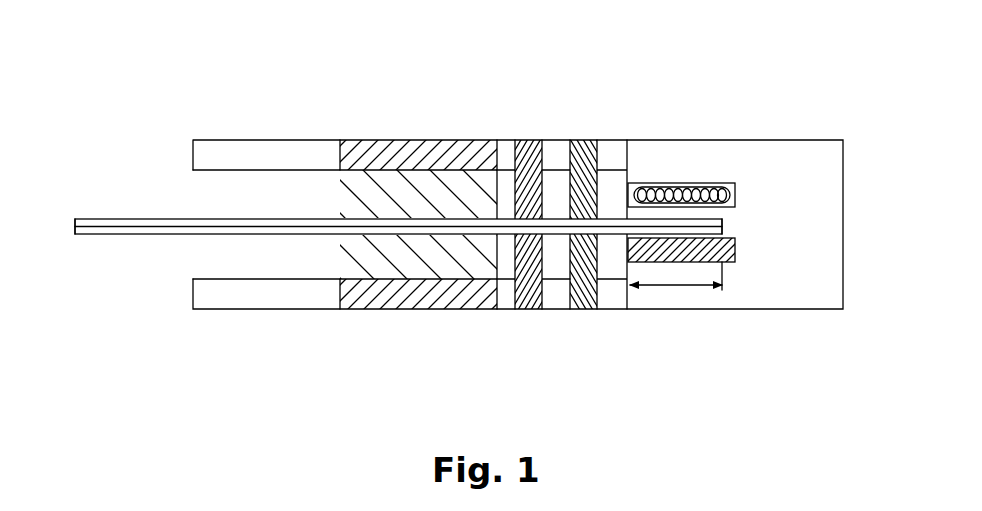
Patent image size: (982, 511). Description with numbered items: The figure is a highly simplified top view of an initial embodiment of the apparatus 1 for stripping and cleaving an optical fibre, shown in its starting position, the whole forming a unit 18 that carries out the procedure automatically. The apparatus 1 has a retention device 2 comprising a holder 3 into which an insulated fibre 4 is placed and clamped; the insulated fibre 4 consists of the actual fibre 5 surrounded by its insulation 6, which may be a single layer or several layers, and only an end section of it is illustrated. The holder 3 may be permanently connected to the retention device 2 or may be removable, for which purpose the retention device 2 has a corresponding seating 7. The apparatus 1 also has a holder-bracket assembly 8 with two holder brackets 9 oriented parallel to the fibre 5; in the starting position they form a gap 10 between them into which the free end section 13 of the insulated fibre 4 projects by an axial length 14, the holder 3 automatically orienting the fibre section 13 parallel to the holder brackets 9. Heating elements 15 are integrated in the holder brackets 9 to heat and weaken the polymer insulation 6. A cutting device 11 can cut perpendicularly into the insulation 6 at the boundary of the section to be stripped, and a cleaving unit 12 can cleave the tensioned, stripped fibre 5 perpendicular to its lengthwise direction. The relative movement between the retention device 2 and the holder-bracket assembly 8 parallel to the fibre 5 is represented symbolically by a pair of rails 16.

The apparatus 1 is at (167, 86).
The retention device 2 is at (400, 138).
The holder 3 is at (343, 200).
The insulated fibre 4 is at (168, 237).
The fibre 5 is at (190, 222).
The insulation 6 is at (108, 236).
The seating 7 is at (448, 192).
The holder-bracket assembly 8 is at (720, 176).
The holder brackets 9 is at (736, 190).
The gap 10 is at (730, 226).
The cutting device 11 is at (587, 130).
The cleaving unit 12 is at (532, 137).
The free end section 13 is at (689, 221).
The axial length 14 is at (669, 285).
The heating elements 15 is at (668, 188).
The pair of rails 16 is at (246, 152).
The unit 18 is at (393, 333).